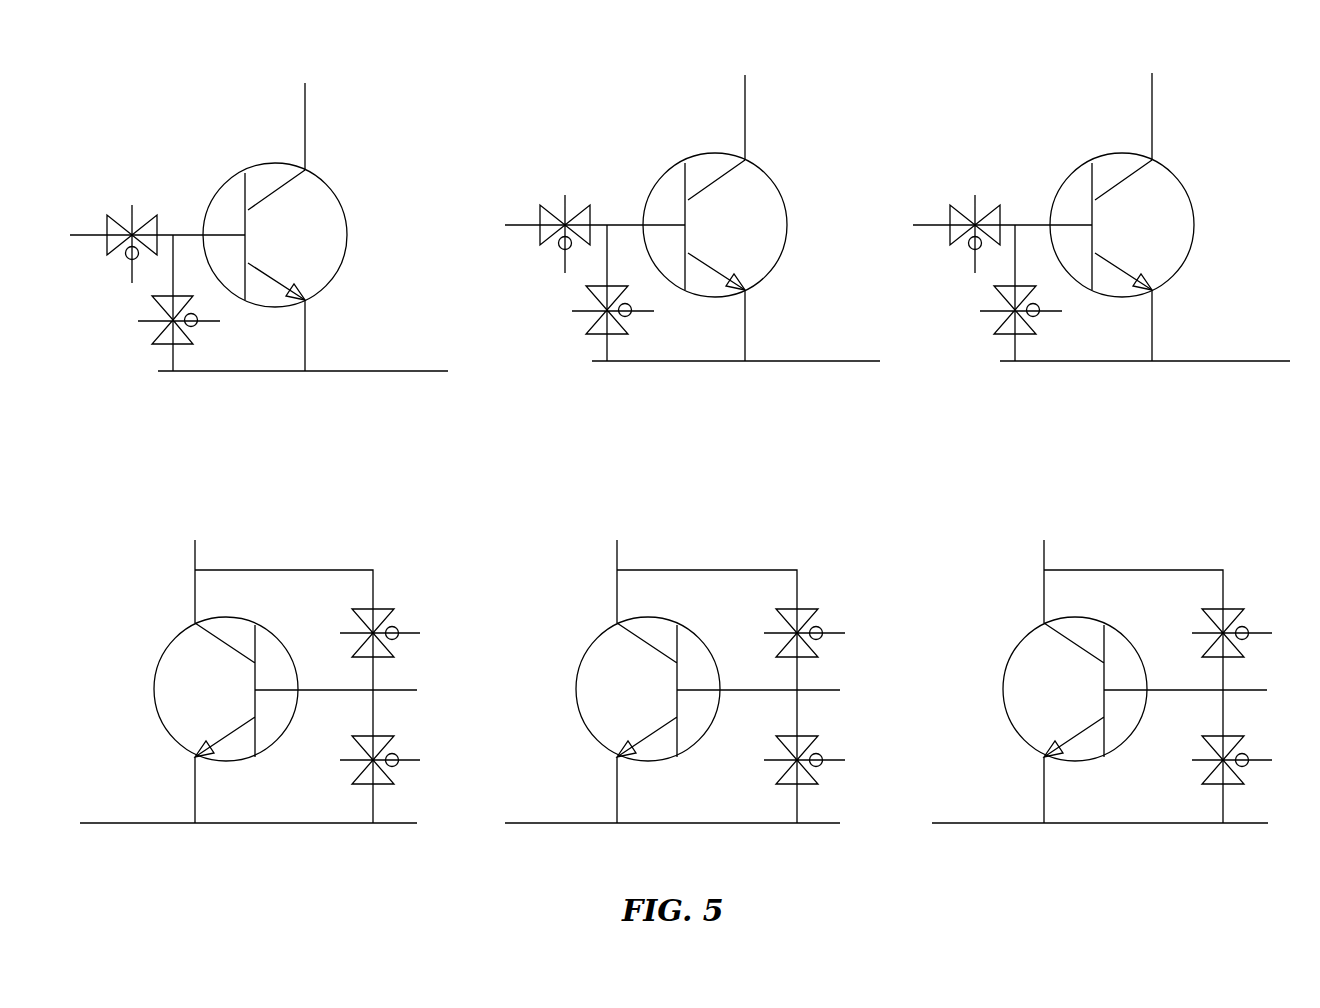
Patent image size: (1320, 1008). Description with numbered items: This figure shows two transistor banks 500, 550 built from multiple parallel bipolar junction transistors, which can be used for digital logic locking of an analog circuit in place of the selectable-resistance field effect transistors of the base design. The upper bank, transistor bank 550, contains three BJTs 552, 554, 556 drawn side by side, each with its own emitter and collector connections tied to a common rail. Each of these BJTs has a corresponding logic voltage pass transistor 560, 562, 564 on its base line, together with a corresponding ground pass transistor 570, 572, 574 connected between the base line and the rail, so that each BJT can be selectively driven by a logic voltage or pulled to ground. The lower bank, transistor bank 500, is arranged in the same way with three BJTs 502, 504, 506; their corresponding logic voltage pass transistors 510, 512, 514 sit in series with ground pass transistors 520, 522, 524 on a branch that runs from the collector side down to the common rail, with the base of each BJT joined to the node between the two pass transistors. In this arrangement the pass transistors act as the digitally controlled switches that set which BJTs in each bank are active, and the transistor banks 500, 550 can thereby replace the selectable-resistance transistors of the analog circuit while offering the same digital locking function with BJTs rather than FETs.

The transistor bank 500 is at (745, 480).
The BJT 502 is at (190, 680).
The BJT 504 is at (613, 681).
The BJT 506 is at (1040, 681).
The logic voltage pass transistor 510 is at (400, 596).
The logic voltage pass transistor 512 is at (822, 596).
The logic voltage pass transistor 514 is at (1248, 596).
The ground pass transistor 520 is at (410, 780).
The ground pass transistor 522 is at (834, 780).
The ground pass transistor 524 is at (1182, 775).
The transistor bank 550 is at (712, 40).
The BJT 552 is at (345, 188).
The BJT 554 is at (780, 178).
The BJT 556 is at (1190, 178).
The logic voltage pass transistor 560 is at (123, 200).
The logic voltage pass transistor 562 is at (556, 190).
The logic voltage pass transistor 564 is at (966, 190).
The ground pass transistor 570 is at (128, 318).
The ground pass transistor 572 is at (562, 308).
The ground pass transistor 574 is at (972, 308).